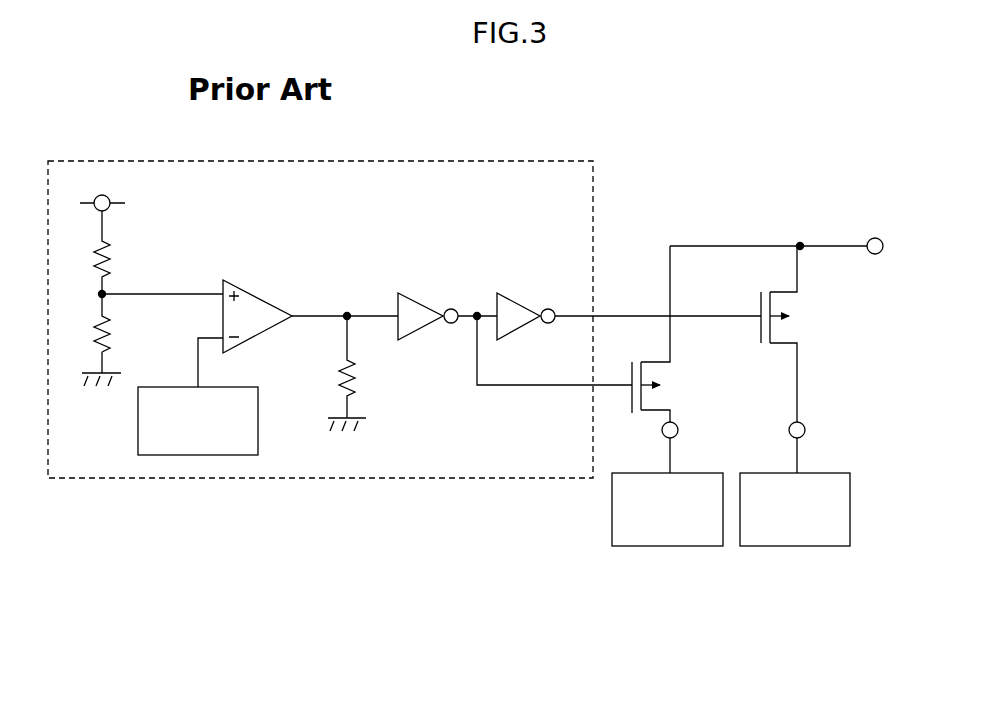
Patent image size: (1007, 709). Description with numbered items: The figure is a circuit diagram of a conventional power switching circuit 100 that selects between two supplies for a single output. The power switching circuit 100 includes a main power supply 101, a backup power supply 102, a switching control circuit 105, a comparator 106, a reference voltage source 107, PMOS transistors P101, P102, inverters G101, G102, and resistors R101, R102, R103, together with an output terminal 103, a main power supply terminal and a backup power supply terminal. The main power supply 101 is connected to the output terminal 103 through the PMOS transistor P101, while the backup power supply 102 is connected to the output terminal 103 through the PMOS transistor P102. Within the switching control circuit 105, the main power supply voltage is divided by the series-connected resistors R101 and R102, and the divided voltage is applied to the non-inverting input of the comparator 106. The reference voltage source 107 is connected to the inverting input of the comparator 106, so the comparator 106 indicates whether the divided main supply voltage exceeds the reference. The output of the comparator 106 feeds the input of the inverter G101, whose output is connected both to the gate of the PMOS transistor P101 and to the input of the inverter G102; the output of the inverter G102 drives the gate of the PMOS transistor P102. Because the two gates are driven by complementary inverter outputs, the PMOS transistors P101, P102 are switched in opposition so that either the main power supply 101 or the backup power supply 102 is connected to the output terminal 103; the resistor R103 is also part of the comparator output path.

The power switching circuit 100 is at (645, 160).
The main power supply 101 is at (668, 546).
The backup power supply 102 is at (797, 546).
The output terminal 103 is at (875, 254).
The switching control circuit 105 is at (455, 178).
The comparator 106 is at (264, 296).
The reference voltage source 107 is at (138, 427).
The resistor R101 is at (125, 258).
The resistor R102 is at (125, 332).
The resistor R103 is at (371, 367).
The inverter G101 is at (428, 305).
The inverter G102 is at (526, 305).
The PMOS transistor P101 is at (644, 334).
The PMOS transistor P102 is at (773, 334).